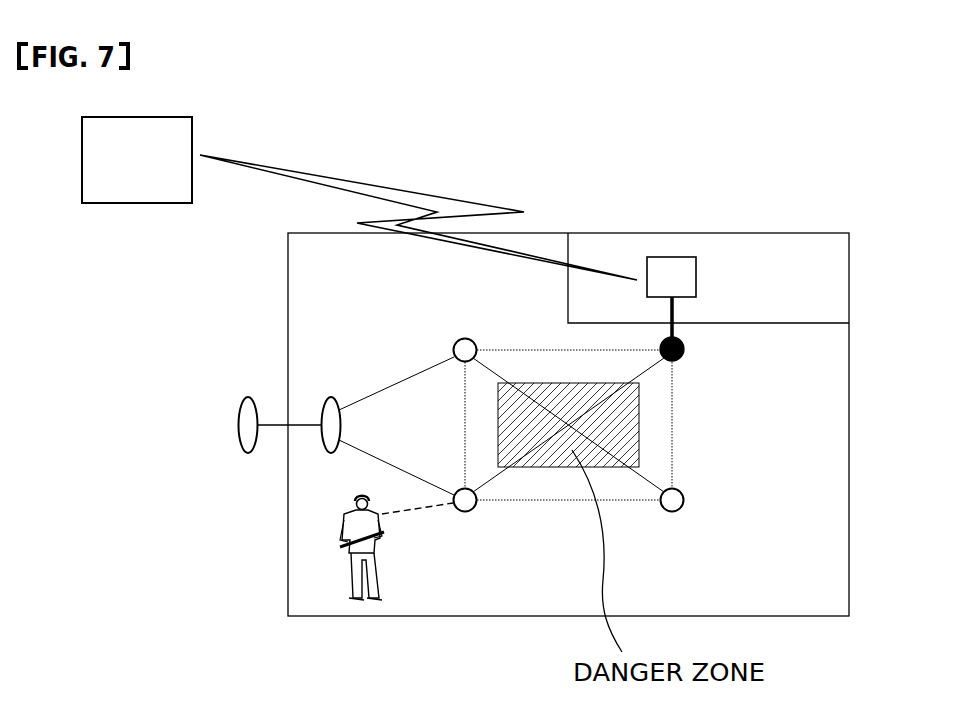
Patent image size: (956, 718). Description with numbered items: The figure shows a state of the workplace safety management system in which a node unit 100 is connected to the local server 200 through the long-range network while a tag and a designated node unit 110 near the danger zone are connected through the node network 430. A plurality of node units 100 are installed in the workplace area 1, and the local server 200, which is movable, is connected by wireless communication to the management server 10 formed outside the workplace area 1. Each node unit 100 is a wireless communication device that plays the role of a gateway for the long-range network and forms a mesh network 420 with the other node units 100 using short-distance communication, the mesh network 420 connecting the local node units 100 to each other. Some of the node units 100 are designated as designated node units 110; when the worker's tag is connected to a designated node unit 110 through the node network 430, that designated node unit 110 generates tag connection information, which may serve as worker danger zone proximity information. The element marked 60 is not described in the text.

The management server 10 is at (359, 198).
The workplace area 1 is at (783, 233).
The partition line 60 is at (810, 323).
The local server 200 is at (672, 257).
The node unit 100 is at (685, 349).
The mesh network 420 is at (272, 418).
The designated node unit 110 is at (465, 512).
The node network 430 is at (412, 512).